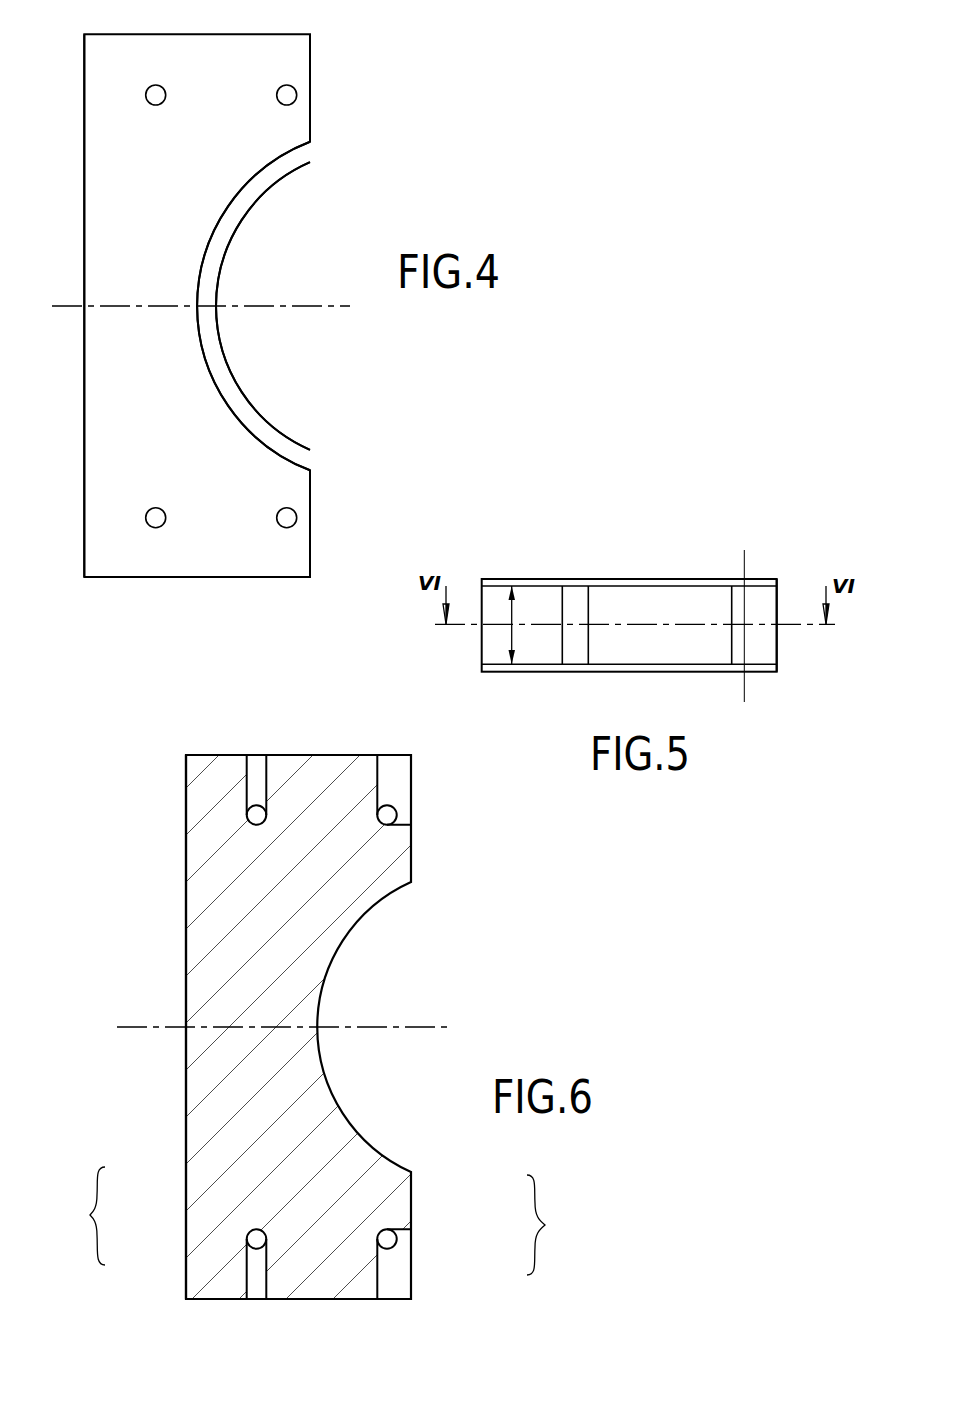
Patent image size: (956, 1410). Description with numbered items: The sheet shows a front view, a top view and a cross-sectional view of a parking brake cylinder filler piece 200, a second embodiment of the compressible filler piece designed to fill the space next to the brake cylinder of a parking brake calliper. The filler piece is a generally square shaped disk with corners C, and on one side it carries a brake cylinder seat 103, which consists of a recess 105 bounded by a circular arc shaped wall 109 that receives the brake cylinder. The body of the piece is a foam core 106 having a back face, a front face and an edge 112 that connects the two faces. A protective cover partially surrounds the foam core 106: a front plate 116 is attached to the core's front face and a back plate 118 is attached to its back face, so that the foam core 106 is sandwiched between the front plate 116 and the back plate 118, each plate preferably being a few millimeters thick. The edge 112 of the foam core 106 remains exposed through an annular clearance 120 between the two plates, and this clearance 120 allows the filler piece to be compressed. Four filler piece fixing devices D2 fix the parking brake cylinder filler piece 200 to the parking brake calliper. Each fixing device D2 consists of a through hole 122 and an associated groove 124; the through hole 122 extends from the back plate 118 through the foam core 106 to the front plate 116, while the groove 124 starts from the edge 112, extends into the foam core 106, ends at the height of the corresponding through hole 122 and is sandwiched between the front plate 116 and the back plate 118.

In FIG. 4, the parking brake cylinder filler piece 200 is at (364, 136).
In FIG. 5, the parking brake cylinder filler piece 200 is at (718, 714).
In FIG. 6, the parking brake cylinder filler piece 200 is at (452, 893).
In FIG. 4, the brake cylinder seat 103 is at (374, 340).
In FIG. 4, the recess 105 is at (280, 215).
In FIG. 4, the foam core 106 is at (220, 373).
In FIG. 5, the foam core 106 is at (762, 643).
In FIG. 6, the foam core 106 is at (218, 972).
In FIG. 4, the circular arc shaped wall 109 is at (257, 410).
In FIG. 6, the edge 112 is at (208, 755).
In FIG. 5, the front plate 116 is at (660, 580).
In FIG. 4, the back plate 118 is at (113, 408).
In FIG. 5, the back plate 118 is at (633, 668).
In FIG. 5, the annular clearance 120 is at (516, 618).
In FIG. 4, the through hole 122 is at (286, 518).
In FIG. 6, the through hole 122 is at (254, 818).
In FIG. 5, the groove 124 is at (574, 602).
In FIG. 6, the groove 124 is at (395, 773).
In FIG. 4, the corner C is at (86, 598).
In FIG. 6, the filler piece fixing device D2 is at (317, 1221).